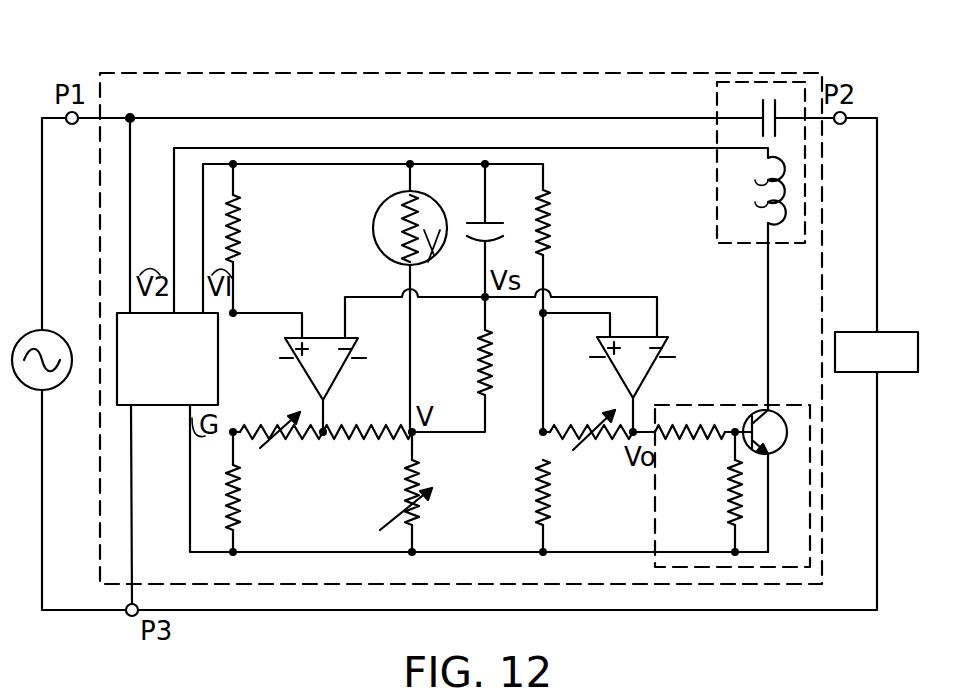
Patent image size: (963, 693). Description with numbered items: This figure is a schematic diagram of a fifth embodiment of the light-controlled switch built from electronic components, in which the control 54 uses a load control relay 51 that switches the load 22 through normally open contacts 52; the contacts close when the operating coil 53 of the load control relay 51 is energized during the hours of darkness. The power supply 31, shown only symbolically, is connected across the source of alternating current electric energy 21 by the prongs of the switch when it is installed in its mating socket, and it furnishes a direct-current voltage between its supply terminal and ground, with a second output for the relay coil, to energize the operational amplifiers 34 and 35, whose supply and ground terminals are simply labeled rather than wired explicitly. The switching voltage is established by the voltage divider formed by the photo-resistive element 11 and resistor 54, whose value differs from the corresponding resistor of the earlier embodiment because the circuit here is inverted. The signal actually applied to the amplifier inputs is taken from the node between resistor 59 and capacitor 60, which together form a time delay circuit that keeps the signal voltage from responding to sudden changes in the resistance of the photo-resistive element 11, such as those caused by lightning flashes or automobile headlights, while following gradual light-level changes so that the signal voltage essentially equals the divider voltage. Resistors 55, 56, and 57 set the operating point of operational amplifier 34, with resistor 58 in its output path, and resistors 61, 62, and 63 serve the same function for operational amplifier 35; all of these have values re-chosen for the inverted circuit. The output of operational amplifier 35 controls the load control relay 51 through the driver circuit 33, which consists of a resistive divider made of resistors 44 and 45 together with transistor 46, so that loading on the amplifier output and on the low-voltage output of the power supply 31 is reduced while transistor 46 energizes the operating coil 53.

The photo-resistive element 11 is at (440, 214).
The source of alternating current electric energy 21 is at (50, 340).
The load 22 is at (885, 332).
The power supply 31 is at (153, 405).
The driver circuit 33 is at (806, 405).
The operational amplifier 34 is at (352, 338).
The operational amplifier 35 is at (666, 336).
The resistor 44 is at (685, 439).
The resistor 45 is at (730, 518).
The transistor 46 is at (778, 452).
The load control relay 51 is at (717, 235).
The normally open contacts 52 is at (762, 104).
The operating coil 53 is at (760, 186).
The resistor 54 is at (436, 460).
The resistor 55 is at (258, 232).
The resistor 56 is at (258, 484).
The resistor 57 is at (256, 430).
The resistor 58 is at (372, 428).
The resistor 59 is at (492, 358).
The capacitor 60 is at (488, 222).
The resistor 61 is at (553, 206).
The resistor 62 is at (552, 478).
The resistor 63 is at (572, 428).